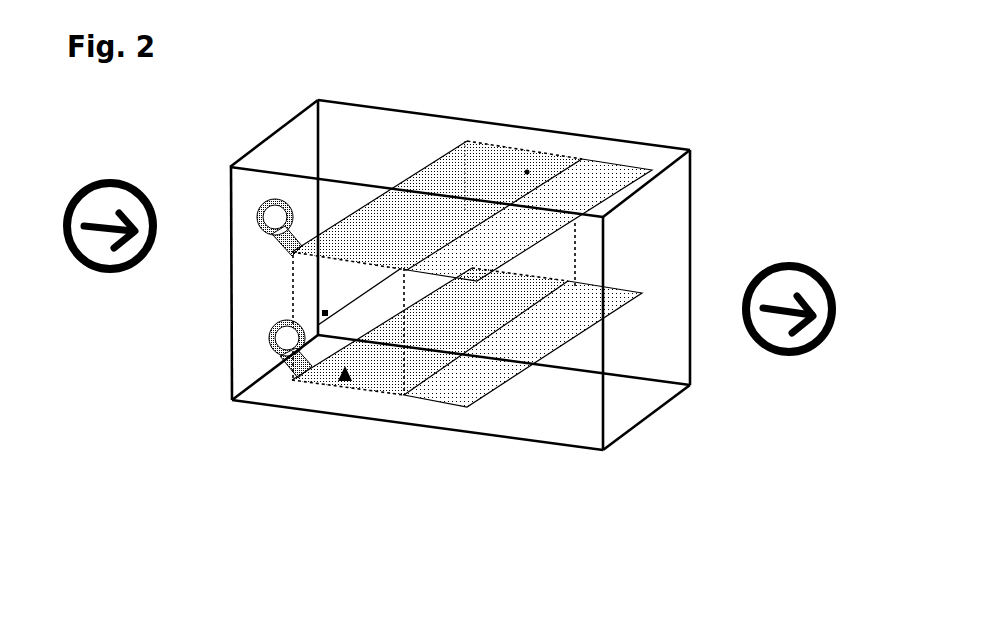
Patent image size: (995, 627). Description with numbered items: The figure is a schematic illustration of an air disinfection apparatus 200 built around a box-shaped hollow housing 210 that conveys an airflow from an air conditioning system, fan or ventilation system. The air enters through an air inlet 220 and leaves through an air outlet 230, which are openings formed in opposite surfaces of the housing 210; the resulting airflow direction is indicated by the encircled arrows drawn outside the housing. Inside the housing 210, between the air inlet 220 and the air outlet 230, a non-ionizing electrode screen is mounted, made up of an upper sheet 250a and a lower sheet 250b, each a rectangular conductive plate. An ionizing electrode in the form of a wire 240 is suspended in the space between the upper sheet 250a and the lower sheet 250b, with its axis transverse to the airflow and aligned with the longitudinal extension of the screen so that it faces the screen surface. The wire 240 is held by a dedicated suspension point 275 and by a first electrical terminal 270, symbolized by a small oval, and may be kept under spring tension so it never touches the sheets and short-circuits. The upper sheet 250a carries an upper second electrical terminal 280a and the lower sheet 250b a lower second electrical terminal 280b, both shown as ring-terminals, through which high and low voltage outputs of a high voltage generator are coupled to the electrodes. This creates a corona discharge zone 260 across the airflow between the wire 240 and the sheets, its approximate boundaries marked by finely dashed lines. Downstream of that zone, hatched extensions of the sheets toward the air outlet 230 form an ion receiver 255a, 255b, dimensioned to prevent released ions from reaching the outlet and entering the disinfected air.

The air disinfection apparatus 200 is at (700, 106).
The hollow housing 210 is at (283, 410).
The air inlet 220 is at (236, 283).
The air outlet 230 is at (688, 323).
The ionizing electrode (wire) 240 is at (362, 290).
The upper sheet 250a is at (600, 220).
The lower sheet 250b is at (570, 338).
The ion receiver 255a is at (590, 217).
The ion receiver 255b is at (530, 362).
The corona discharge zone 260 is at (345, 380).
The first electrical terminal 270 is at (533, 156).
The dedicated suspension point 275 is at (326, 310).
The upper second electrical terminal 280a is at (264, 200).
The lower second electrical terminal 280b is at (270, 338).